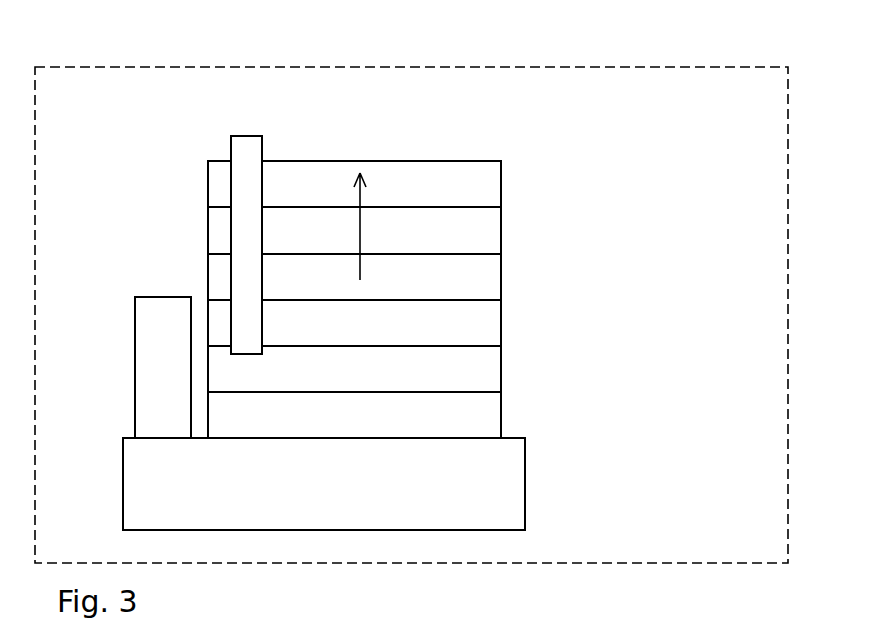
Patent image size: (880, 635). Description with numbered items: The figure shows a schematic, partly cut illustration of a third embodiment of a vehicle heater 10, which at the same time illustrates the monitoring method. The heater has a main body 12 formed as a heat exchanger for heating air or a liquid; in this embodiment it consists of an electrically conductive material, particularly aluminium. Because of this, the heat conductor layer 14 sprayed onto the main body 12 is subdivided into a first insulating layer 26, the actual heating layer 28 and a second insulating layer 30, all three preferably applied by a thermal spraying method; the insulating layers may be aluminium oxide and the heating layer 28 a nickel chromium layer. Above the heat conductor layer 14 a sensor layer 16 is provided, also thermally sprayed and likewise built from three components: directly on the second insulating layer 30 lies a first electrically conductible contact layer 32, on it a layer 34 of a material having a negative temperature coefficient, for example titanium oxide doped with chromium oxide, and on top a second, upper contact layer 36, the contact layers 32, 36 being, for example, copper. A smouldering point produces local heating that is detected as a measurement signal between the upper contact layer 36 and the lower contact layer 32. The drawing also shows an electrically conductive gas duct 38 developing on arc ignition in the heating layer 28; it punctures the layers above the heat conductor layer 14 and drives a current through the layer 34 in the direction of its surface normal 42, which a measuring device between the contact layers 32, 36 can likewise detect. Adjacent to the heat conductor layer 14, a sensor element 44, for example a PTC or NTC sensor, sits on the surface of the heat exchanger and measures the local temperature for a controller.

The vehicle heater 10 is at (100, 563).
The main body 12 is at (525, 458).
The heat conductor layer 14 is at (613, 290).
The sensor layer 16 is at (613, 146).
The first insulating layer 26 is at (501, 404).
The actual heating layer 28 is at (501, 353).
The second insulating layer 30 is at (501, 311).
The first electrically conductible contact layer 32 is at (501, 265).
The layer of a material having a negative temperature coefficient 34 is at (501, 218).
The second, upper, electrically conductible contact layer 36 is at (501, 177).
The electrically conductive gas duct 38 is at (231, 190).
The surface normal 42 is at (360, 225).
The sensor element 44 is at (135, 359).